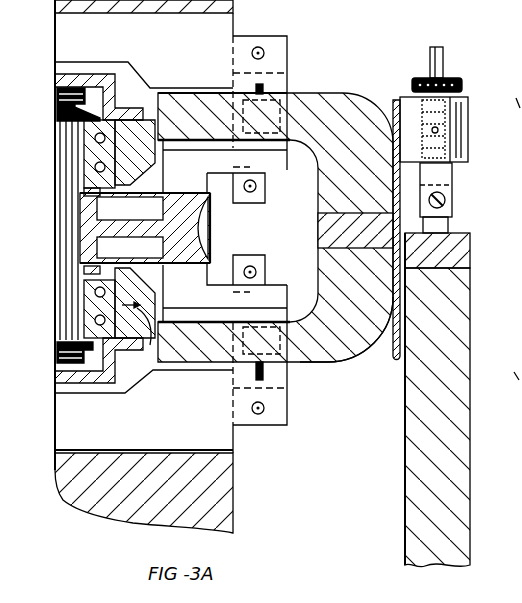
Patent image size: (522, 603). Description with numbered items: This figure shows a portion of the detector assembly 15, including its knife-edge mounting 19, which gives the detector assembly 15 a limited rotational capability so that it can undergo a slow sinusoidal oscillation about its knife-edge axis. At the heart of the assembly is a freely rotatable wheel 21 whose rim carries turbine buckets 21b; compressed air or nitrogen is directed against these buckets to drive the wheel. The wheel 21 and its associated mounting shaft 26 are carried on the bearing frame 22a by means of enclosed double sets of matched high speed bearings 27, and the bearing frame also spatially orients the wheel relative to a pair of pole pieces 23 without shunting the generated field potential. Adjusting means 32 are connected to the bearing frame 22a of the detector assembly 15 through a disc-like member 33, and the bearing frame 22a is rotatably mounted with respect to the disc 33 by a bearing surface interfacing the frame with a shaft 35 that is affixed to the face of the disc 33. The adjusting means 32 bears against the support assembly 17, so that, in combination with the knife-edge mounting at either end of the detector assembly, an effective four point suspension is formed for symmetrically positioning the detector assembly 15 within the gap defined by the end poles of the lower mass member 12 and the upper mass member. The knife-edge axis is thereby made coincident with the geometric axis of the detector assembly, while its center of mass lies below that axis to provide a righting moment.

The lower mass member 12 is at (218, 488).
The detector assembly 15 is at (313, 65).
The support assembly 17 is at (445, 364).
The knife-edge mounting 19 is at (452, 230).
The wheel 21 is at (210, 200).
The turbine buckets 21b is at (202, 235).
The bearing frame 22a is at (330, 340).
The pole pieces 23 is at (223, 43).
The mounting shaft 26 is at (116, 99).
The high speed bearings 27 is at (148, 353).
The adjusting means 32 is at (443, 57).
The disc-like member 33 is at (393, 108).
The shaft 35 is at (337, 227).